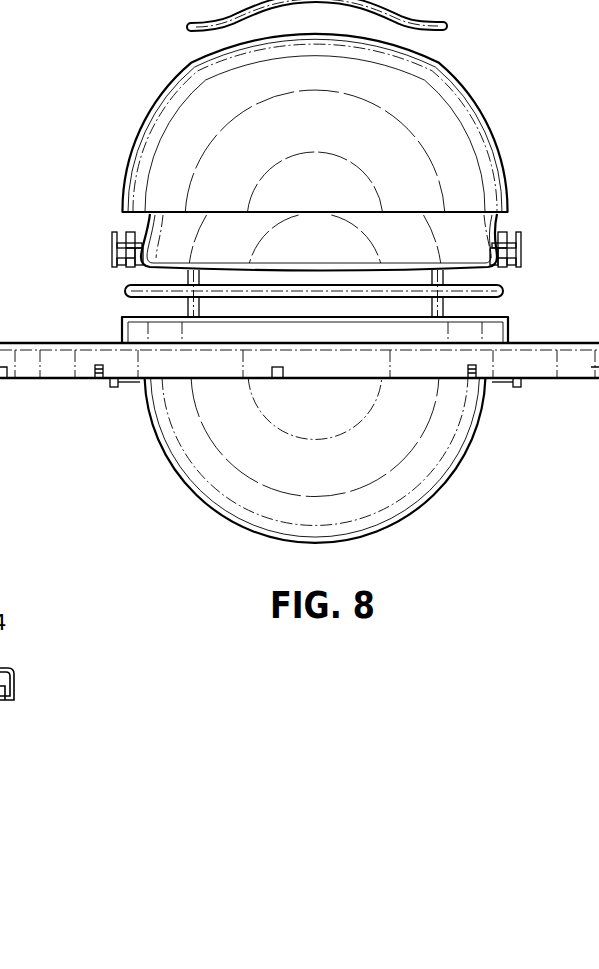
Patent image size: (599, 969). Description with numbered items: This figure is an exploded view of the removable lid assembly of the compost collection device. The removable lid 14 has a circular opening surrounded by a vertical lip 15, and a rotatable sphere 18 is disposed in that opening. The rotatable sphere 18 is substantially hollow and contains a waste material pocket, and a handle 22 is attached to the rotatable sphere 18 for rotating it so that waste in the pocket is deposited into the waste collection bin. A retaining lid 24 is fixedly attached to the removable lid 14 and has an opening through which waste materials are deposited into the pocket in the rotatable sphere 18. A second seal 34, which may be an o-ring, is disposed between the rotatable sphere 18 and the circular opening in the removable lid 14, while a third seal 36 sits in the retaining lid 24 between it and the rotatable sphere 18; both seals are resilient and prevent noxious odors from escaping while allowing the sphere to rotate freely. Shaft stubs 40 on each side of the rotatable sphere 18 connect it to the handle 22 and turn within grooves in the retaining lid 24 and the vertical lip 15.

The removable lid 14 is at (87, 370).
The vertical lip 15 is at (124, 338).
The rotatable sphere 18 is at (172, 443).
The handle 22 is at (522, 250).
The retaining lid 24 is at (174, 92).
The second seal 34 is at (127, 296).
The third seal 36 is at (447, 26).
The shaft stubs 40 is at (112, 264).